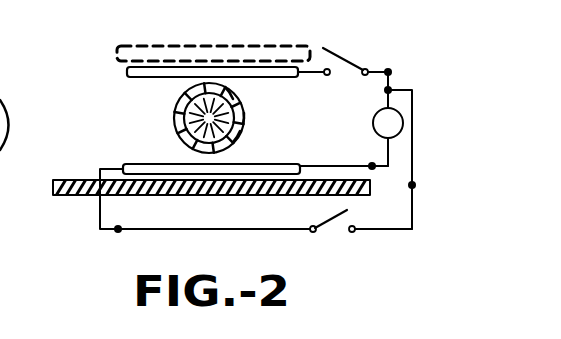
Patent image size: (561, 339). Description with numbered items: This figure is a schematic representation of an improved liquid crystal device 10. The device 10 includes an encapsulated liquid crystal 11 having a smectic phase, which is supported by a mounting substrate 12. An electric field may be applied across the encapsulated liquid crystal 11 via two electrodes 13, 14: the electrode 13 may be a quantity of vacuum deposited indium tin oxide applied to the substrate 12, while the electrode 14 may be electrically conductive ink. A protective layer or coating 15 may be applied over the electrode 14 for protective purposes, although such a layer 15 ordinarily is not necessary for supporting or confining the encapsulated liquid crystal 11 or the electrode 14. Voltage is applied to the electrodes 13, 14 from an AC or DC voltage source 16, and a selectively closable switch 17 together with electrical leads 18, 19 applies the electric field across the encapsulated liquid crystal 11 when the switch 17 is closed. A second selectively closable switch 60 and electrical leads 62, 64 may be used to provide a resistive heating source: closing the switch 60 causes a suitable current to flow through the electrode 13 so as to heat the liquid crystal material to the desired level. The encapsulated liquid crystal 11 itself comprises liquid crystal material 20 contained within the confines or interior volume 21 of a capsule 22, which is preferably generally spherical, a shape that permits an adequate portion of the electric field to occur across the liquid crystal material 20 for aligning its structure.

The liquid crystal device 10 is at (96, 127).
The encapsulated liquid crystal 11 is at (168, 106).
The mounting substrate 12 is at (53, 188).
The electrode 13 is at (124, 166).
The electrode 14 is at (126, 75).
The protective layer 15 is at (217, 45).
The voltage source 16 is at (372, 128).
The selectively closable switch 17 is at (340, 48).
The electrical lead 18 is at (372, 168).
The electrical lead 19 is at (389, 70).
The liquid crystal material 20 is at (242, 107).
The interior volume 21 is at (236, 112).
The capsule 22 is at (236, 137).
The second selectively closable switch 60 is at (326, 229).
The electrical lead 62 is at (413, 188).
The electrical lead 64 is at (117, 231).